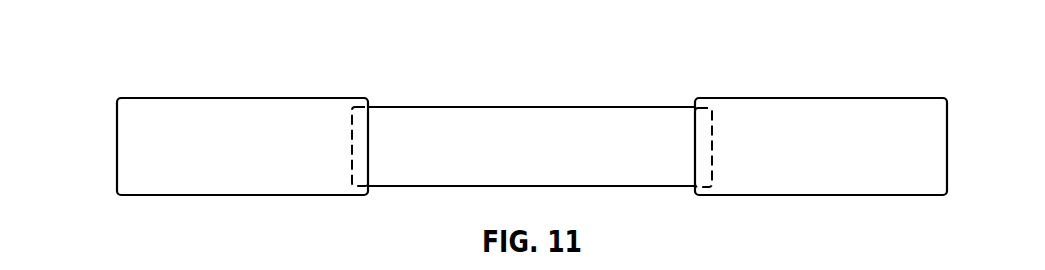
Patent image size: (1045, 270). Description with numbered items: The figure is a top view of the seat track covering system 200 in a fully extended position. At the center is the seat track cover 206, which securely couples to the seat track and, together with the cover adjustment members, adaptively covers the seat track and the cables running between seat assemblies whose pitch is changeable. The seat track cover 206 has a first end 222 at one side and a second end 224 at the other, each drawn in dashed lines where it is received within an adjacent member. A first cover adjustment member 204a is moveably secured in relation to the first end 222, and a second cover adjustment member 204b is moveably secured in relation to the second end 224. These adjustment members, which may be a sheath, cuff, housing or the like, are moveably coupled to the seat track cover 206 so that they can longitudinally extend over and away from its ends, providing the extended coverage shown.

The seat track covering system 200 is at (125, 44).
The first cover adjustment member 204a is at (227, 97).
The second cover adjustment member 204b is at (882, 97).
The seat track cover 206 is at (529, 106).
The first end 222 is at (352, 158).
The second end 224 is at (712, 138).